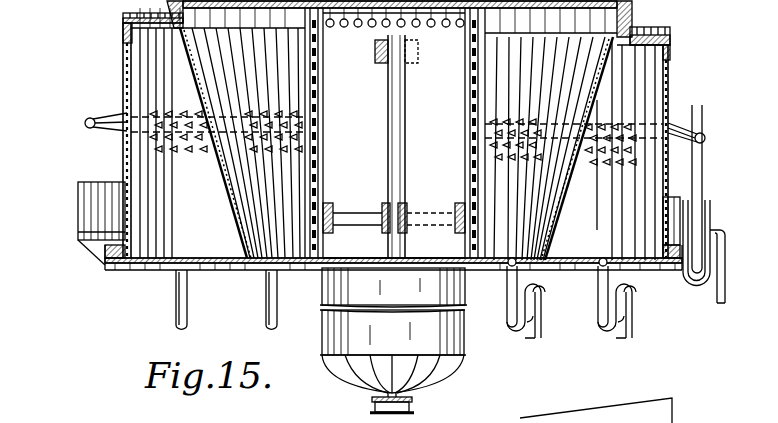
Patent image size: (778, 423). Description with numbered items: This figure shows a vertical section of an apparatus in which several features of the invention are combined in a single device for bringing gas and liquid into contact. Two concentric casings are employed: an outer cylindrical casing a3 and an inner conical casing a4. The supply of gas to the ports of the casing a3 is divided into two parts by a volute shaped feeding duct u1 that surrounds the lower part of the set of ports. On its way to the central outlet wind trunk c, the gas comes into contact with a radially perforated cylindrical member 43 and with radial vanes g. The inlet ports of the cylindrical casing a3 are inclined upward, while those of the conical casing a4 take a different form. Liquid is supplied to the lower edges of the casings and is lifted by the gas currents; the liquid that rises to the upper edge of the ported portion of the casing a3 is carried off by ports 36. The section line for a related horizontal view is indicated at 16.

The outer cylindrical casing a3 is at (124, 84).
The inner conical casing a4 is at (226, 208).
The radial vanes g is at (385, 133).
The radially perforated cylindrical member 43 is at (479, 86).
The ports 36 is at (637, 126).
The inlet box 16 is at (78, 184).
The volute shaped feeding duct u1 is at (84, 222).
The central outlet wind trunk c is at (452, 344).